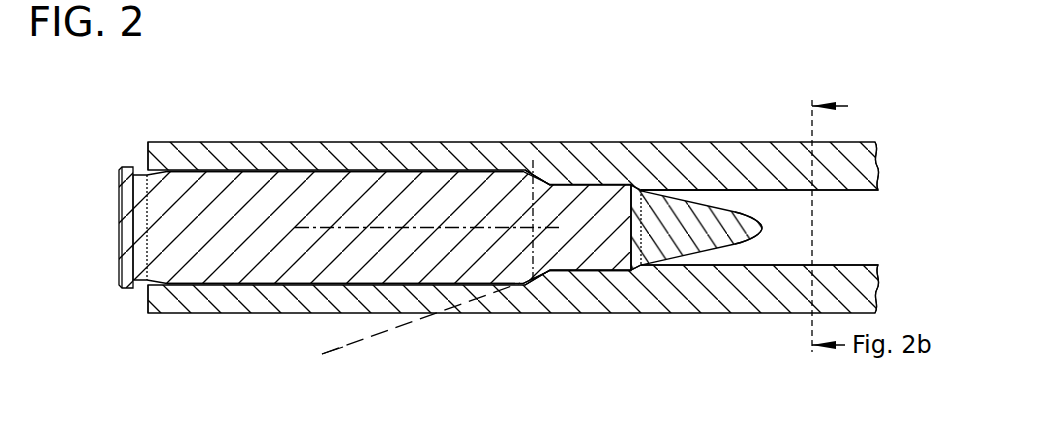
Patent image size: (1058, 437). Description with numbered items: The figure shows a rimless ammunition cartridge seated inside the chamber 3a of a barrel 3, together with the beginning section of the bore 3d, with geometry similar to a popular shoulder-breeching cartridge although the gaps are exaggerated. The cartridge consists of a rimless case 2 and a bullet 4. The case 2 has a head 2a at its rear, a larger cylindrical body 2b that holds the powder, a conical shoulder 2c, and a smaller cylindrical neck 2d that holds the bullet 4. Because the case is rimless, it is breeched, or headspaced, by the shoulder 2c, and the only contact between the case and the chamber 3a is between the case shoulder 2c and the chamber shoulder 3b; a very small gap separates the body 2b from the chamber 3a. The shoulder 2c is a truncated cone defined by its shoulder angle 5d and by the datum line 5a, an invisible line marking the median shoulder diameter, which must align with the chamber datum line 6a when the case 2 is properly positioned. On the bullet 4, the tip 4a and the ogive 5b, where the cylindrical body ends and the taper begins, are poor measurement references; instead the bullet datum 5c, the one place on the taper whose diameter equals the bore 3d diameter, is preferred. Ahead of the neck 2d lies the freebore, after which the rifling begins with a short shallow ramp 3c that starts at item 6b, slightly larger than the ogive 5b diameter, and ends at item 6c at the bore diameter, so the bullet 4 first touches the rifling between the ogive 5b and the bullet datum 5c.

The rimless case 2 is at (328, 228).
The head 2a is at (131, 288).
The body 2b is at (341, 334).
The shoulder 2c is at (523, 340).
The neck 2d is at (590, 340).
The barrel 3 is at (513, 191).
The chamber 3a is at (142, 191).
The chamber shoulder 3b is at (532, 169).
The ramp 3c is at (759, 135).
The bore 3d is at (895, 193).
The bullet 4 is at (696, 297).
The tip 4a is at (760, 310).
The datum line 5a is at (349, 144).
The ogive 5b is at (601, 170).
The bullet datum 5c is at (619, 147).
The shoulder angle 5d is at (427, 279).
The chamber datum line 6a is at (505, 132).
The ramp start 6b is at (671, 107).
The ramp end 6c is at (727, 136).